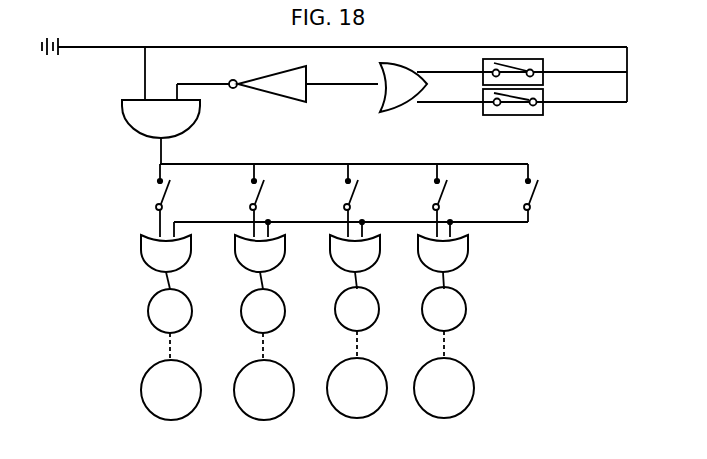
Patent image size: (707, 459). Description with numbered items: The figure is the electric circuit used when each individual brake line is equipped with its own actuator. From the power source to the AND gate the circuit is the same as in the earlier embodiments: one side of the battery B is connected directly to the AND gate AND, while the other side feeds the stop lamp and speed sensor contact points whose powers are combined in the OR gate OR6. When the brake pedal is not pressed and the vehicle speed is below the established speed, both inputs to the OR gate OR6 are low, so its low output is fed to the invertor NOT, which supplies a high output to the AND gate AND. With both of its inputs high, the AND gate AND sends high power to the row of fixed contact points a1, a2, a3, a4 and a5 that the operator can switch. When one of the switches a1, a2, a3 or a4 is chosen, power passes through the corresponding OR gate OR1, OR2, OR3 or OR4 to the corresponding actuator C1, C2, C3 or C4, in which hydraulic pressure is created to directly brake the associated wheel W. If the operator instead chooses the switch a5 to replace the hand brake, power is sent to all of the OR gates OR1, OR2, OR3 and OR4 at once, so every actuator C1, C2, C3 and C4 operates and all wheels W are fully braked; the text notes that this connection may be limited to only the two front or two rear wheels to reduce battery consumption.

The battery B is at (42, 43).
The AND gate AND is at (161, 119).
The invertor NOT is at (267, 84).
The OR gate OR6 is at (403, 87).
The fixed contact point a1 is at (170, 200).
The fixed contact point a2 is at (264, 200).
The fixed contact point a3 is at (358, 200).
The fixed contact point a4 is at (447, 200).
The fixed contact point a5 is at (538, 193).
The OR gate OR1 is at (166, 262).
The OR gate OR2 is at (260, 262).
The OR gate OR3 is at (355, 262).
The OR gate OR4 is at (443, 262).
The actuator C1 is at (170, 324).
The actuator C2 is at (263, 324).
The actuator C3 is at (357, 322).
The actuator C4 is at (444, 322).
The wheel W is at (307, 389).